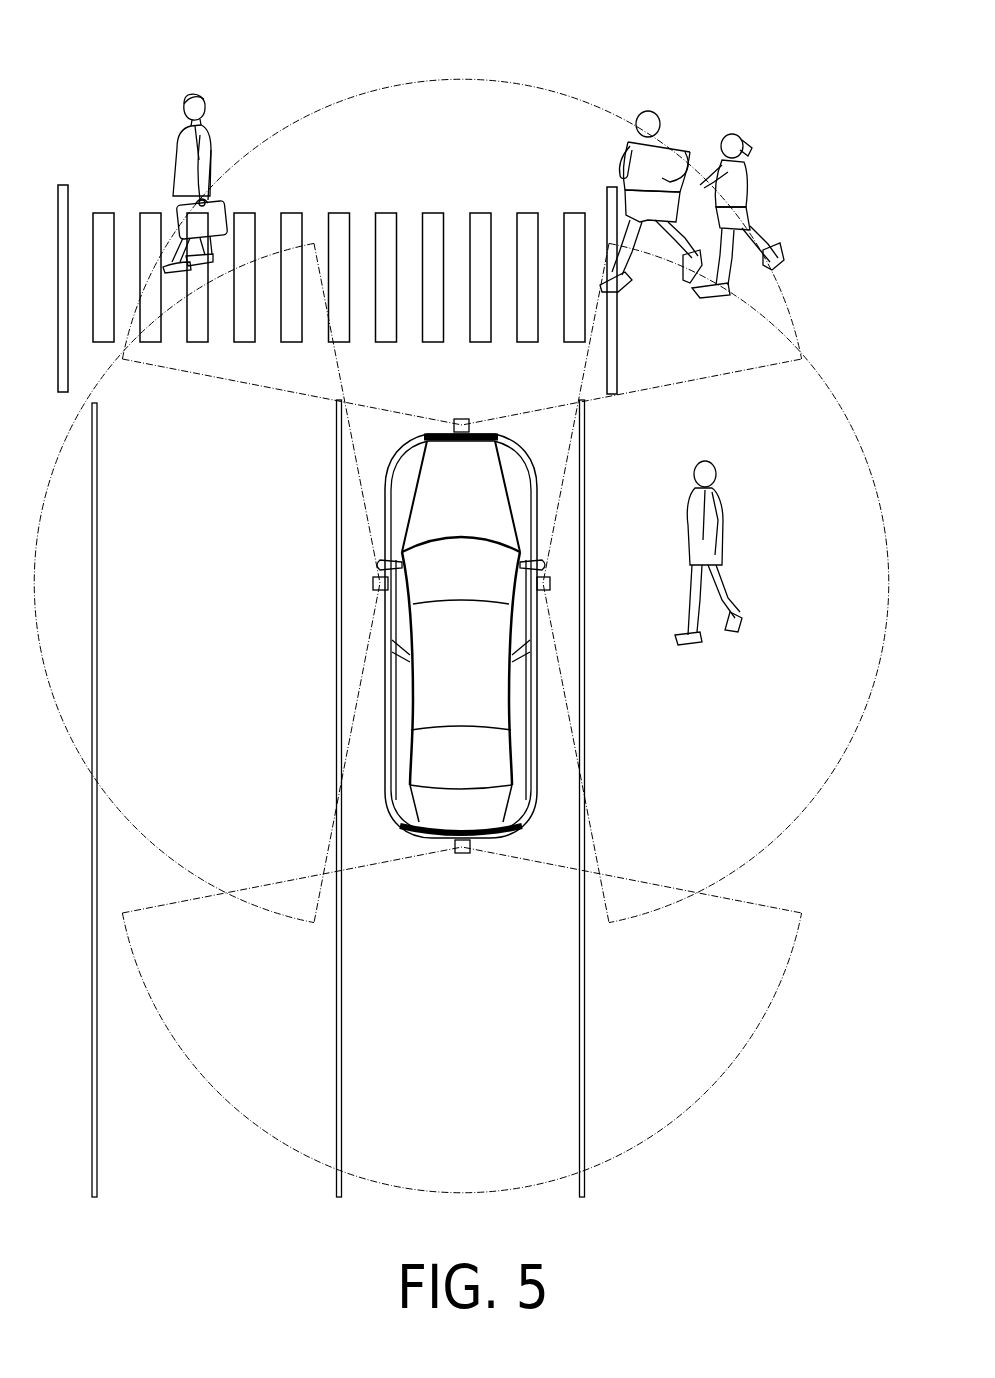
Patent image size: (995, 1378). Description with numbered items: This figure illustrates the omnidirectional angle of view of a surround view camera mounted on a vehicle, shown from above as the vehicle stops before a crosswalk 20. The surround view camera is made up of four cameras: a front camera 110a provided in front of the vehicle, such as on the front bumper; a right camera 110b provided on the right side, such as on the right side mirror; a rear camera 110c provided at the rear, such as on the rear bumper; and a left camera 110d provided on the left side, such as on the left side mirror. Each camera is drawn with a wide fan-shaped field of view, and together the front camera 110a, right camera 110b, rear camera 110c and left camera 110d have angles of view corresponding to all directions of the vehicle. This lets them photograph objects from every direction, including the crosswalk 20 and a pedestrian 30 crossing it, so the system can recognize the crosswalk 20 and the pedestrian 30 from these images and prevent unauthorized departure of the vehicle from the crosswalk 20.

The crosswalk 20 is at (103, 196).
The pedestrian 30 is at (208, 78).
The front camera 110a is at (462, 419).
The right camera 110b is at (550, 583).
The rear camera 110c is at (460, 853).
The left camera 110d is at (373, 583).